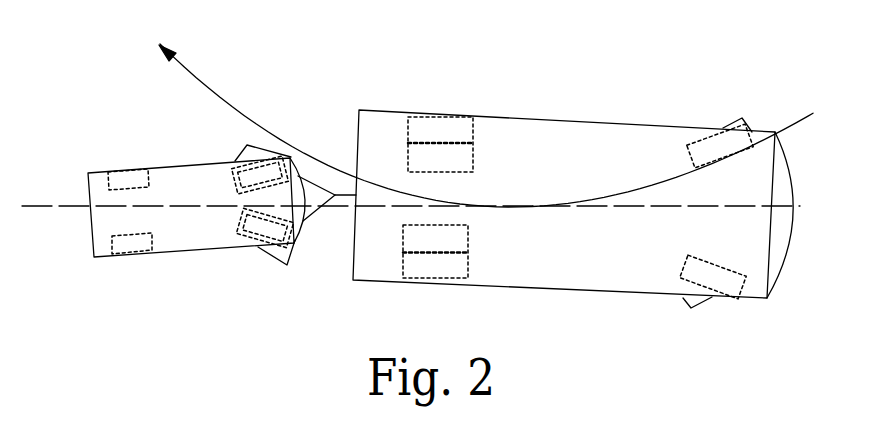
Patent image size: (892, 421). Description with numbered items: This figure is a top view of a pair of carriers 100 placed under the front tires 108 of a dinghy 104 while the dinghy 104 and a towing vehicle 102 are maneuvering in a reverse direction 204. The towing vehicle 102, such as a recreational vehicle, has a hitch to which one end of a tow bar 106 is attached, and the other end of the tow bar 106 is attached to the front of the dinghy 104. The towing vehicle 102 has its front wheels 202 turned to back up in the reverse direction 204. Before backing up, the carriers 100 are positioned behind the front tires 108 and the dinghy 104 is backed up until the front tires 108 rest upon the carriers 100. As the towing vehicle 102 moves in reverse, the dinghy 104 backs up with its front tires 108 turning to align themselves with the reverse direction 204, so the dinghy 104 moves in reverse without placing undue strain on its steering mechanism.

The carrier 100 is at (243, 143).
The towing vehicle 102 is at (558, 120).
The dinghy 104 is at (113, 172).
The tow bar 106 is at (310, 215).
The front tires 108 is at (257, 155).
The front wheels 202 is at (742, 118).
The reverse direction 204 is at (212, 87).